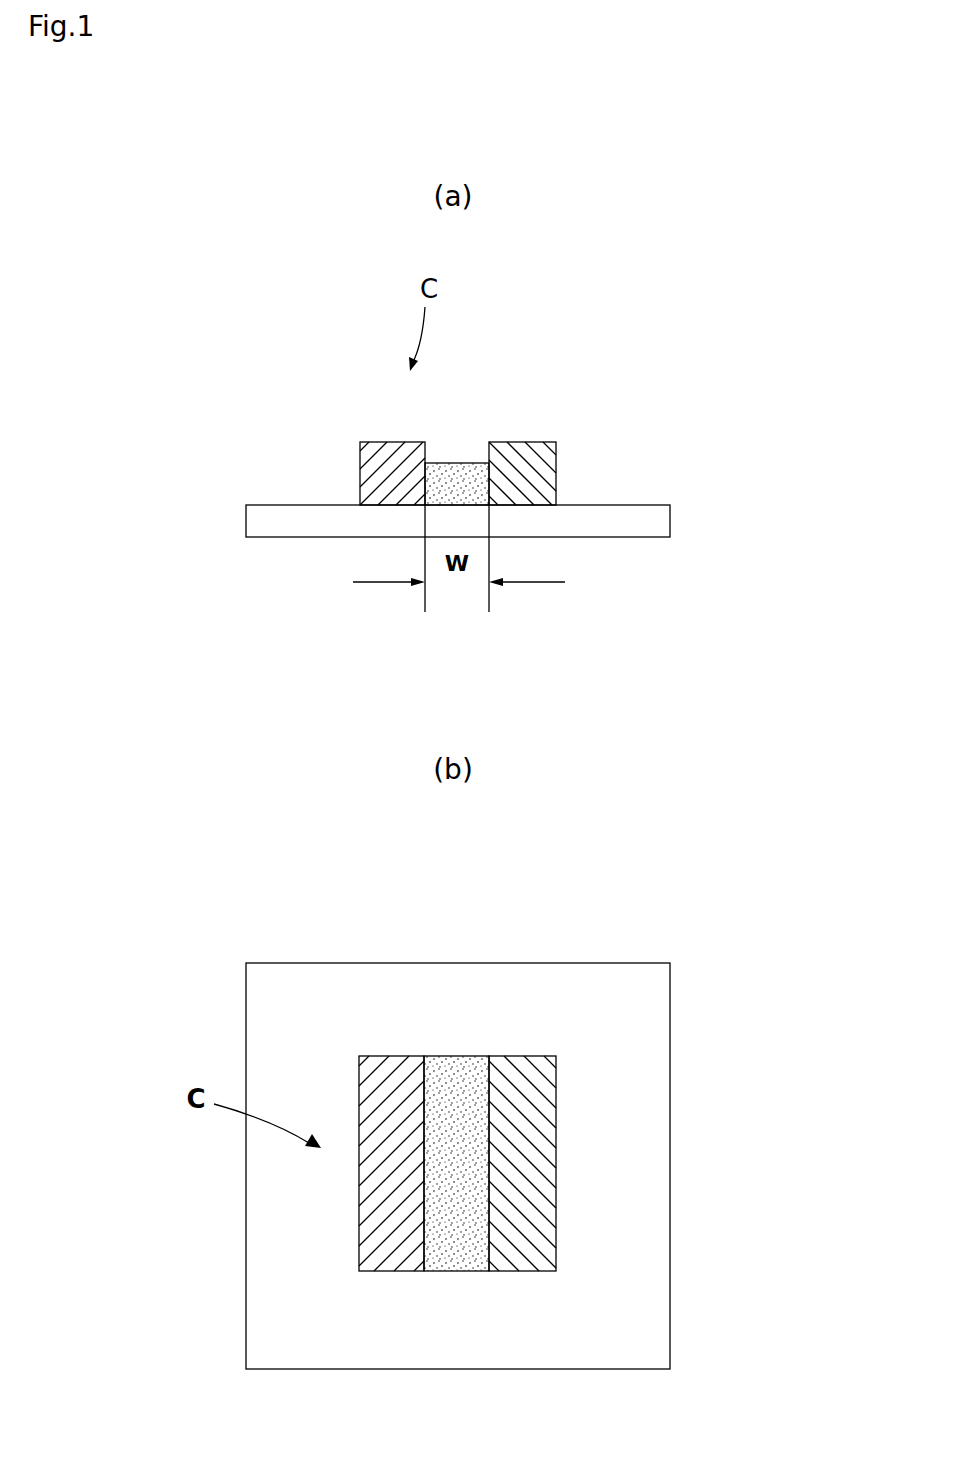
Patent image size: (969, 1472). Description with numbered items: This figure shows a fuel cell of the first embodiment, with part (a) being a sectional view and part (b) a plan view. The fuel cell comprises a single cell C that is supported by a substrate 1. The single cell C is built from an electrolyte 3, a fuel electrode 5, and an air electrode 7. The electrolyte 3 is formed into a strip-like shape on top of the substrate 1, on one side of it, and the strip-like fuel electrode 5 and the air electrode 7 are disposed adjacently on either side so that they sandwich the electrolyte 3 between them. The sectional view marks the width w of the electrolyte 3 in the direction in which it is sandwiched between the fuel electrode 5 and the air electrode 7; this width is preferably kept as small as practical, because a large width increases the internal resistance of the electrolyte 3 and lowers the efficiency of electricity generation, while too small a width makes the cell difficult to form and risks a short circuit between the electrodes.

The substrate 1 is at (642, 529).
The electrolyte 3 is at (467, 472).
The fuel electrode 5 is at (359, 459).
The air electrode 7 is at (515, 465).